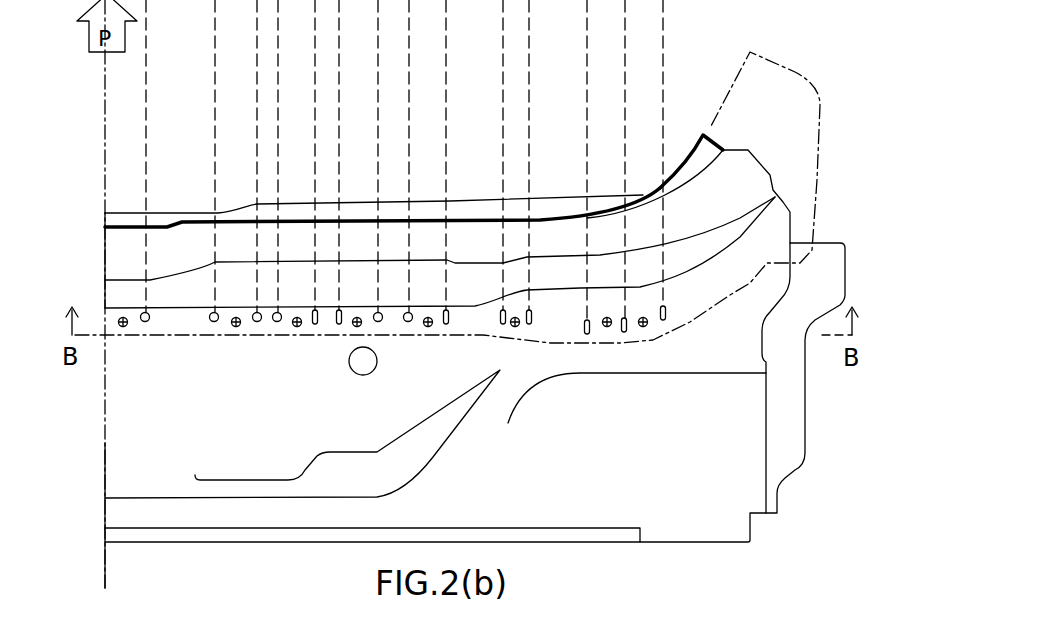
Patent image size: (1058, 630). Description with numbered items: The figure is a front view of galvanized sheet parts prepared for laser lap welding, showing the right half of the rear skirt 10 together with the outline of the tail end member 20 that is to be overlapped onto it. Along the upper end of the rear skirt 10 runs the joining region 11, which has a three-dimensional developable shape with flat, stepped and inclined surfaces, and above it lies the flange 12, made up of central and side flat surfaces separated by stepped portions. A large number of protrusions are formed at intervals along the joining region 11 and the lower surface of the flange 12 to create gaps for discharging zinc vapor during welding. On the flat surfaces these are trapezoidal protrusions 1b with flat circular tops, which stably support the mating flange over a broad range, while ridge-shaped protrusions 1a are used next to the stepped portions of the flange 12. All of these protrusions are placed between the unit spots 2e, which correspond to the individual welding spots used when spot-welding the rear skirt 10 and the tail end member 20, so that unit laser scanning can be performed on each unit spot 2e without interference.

The ridge-shaped protrusion 1a is at (313, 328).
The trapezoidal protrusion 1b is at (280, 337).
The unit spot 2e is at (297, 327).
The rear skirt 10 is at (662, 545).
The joining region 11 is at (413, 113).
The flange 12 is at (695, 162).
The tail end member 20 is at (765, 58).